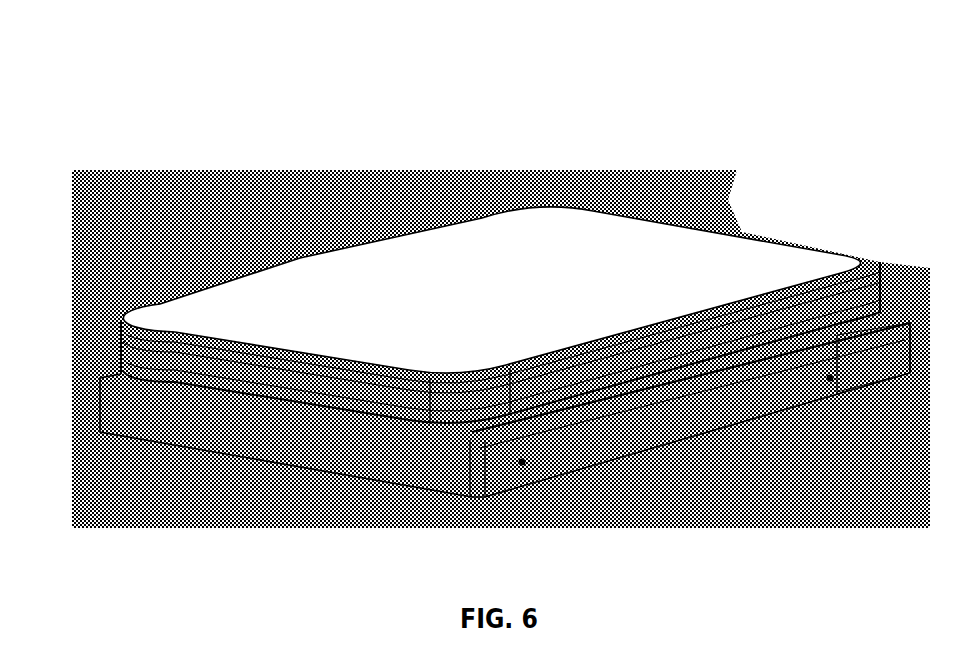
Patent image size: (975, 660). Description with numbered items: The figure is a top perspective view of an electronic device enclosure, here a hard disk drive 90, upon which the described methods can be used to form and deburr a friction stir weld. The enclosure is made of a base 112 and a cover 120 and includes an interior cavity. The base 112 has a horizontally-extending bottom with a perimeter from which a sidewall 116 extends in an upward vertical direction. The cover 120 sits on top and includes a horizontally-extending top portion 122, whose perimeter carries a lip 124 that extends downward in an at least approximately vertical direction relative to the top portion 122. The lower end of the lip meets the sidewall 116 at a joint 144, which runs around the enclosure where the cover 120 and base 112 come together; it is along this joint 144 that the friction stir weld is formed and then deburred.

The hard disk drive 90 is at (396, 111).
The base 112 is at (168, 410).
The sidewall 116 is at (838, 336).
The cover 120 is at (475, 315).
The top portion 122 is at (535, 298).
The lip 124 is at (858, 299).
The joint 144 is at (500, 343).